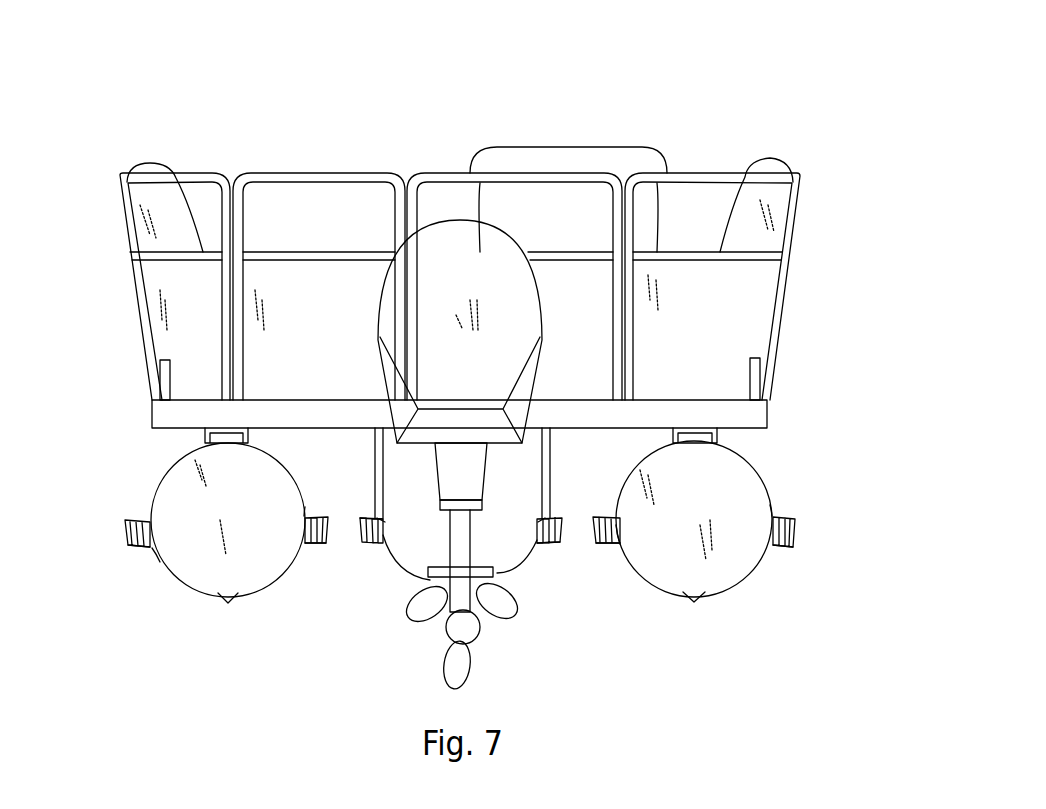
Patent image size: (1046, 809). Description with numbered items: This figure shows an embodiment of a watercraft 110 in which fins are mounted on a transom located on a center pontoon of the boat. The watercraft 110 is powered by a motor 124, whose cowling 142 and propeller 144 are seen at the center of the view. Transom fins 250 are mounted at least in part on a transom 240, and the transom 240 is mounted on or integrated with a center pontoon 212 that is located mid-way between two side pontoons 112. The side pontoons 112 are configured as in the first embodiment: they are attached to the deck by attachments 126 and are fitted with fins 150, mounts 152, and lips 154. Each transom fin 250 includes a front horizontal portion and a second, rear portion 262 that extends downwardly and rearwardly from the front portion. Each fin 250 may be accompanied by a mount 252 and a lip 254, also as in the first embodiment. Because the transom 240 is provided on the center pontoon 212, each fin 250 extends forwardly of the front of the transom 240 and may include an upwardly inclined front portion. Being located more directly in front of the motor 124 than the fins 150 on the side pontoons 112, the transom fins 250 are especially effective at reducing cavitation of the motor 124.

The watercraft 110 is at (682, 104).
The side pontoons 112 is at (182, 560).
The motor 124 is at (460, 385).
The attachments 126 is at (200, 443).
The motor cowling 142 is at (483, 289).
The propeller 144 is at (482, 633).
The fins 150 is at (140, 517).
The mounts 152 is at (307, 517).
The lips 154 is at (128, 543).
The center pontoon 212 is at (543, 417).
The transom 240 is at (550, 453).
The transom fins 250 is at (380, 547).
The mount 252 is at (402, 527).
The lip 254 is at (360, 527).
The second rear portion 262 is at (388, 518).